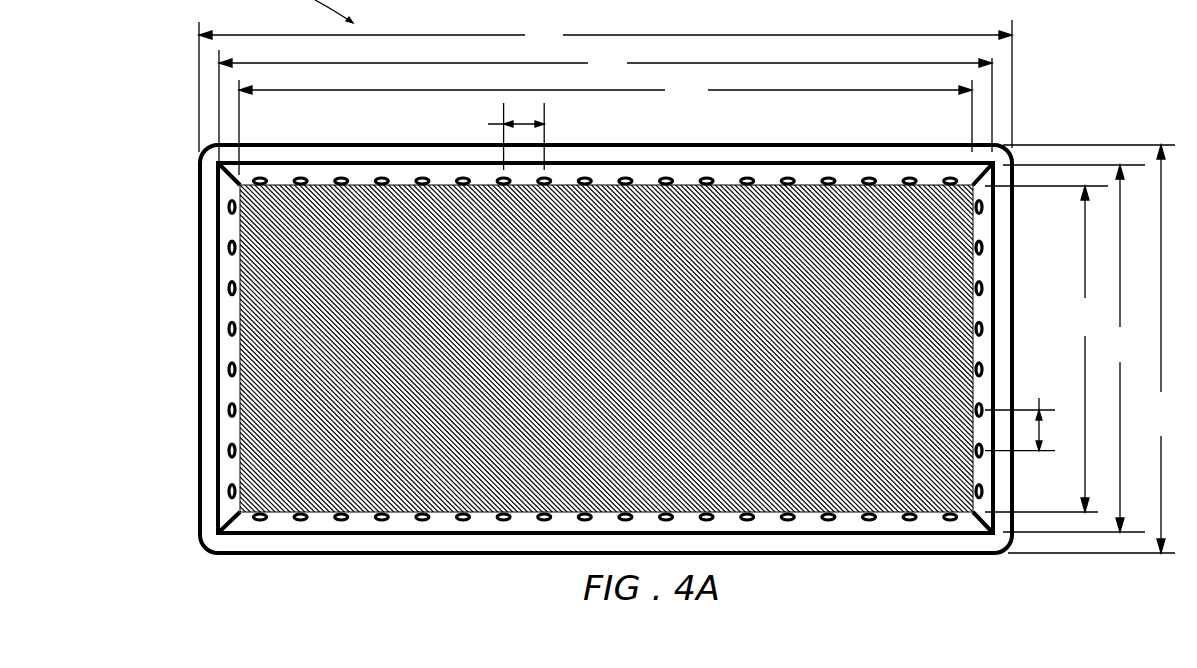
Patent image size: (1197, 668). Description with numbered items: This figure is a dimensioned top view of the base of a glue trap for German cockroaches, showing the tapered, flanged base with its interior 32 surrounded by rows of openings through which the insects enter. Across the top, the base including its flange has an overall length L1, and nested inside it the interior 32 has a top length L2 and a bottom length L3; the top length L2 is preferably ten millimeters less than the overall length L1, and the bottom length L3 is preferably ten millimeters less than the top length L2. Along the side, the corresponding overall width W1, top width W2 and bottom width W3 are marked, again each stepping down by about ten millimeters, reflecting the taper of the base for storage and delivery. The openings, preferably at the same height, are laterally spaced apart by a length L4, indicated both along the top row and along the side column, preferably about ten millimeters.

The interior 32 is at (448, 272).
The overall length L1 is at (605, 86).
The top length L2 is at (605, 107).
The bottom length L3 is at (605, 127).
The length L4 is at (757, 277).
The overall width W1 is at (1089, 349).
The top width W2 is at (1074, 348).
The bottom width W3 is at (1046, 349).